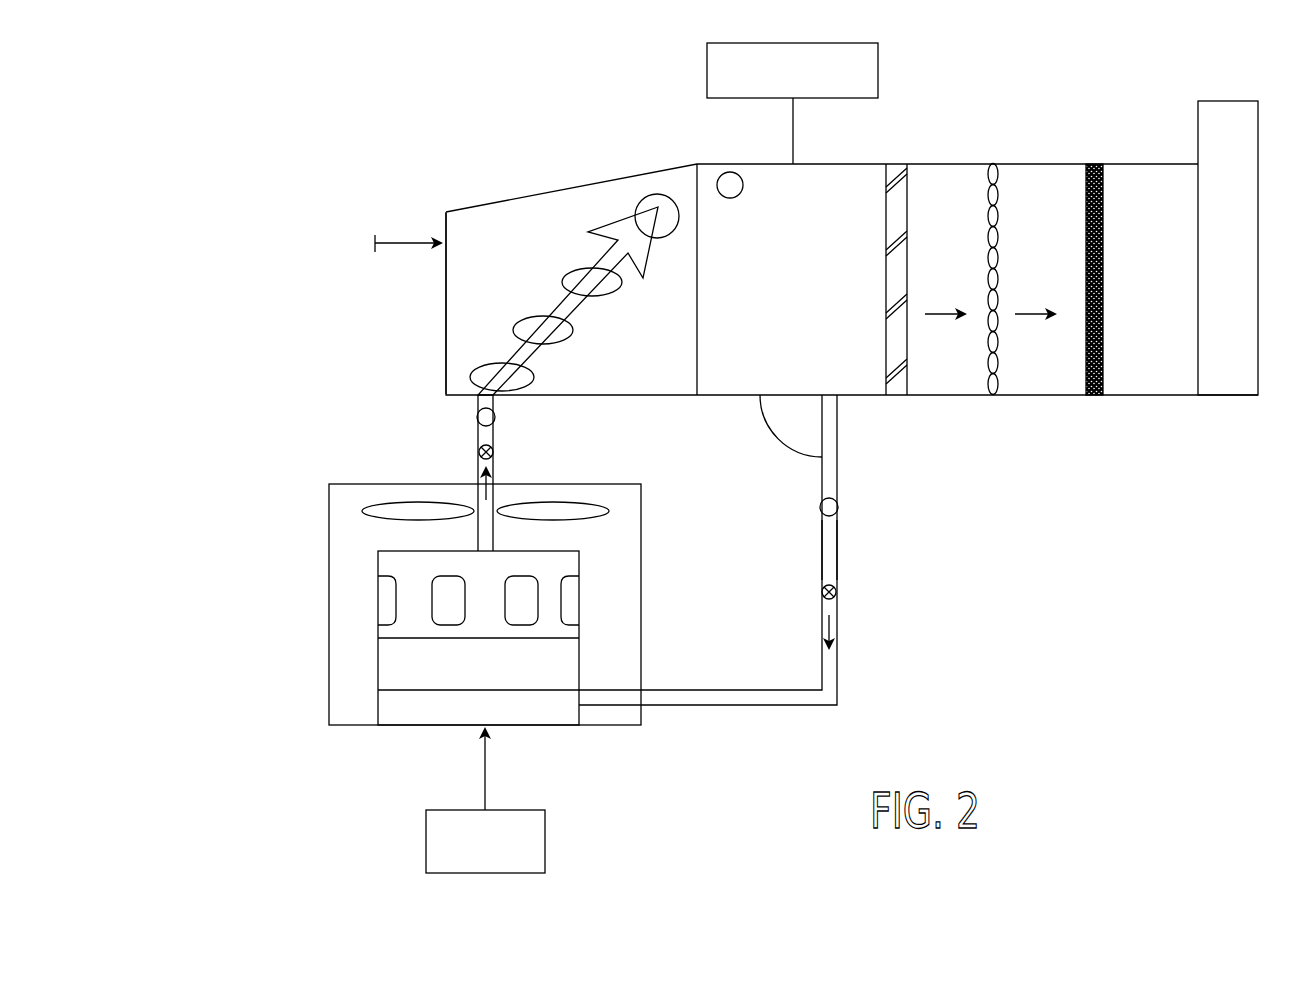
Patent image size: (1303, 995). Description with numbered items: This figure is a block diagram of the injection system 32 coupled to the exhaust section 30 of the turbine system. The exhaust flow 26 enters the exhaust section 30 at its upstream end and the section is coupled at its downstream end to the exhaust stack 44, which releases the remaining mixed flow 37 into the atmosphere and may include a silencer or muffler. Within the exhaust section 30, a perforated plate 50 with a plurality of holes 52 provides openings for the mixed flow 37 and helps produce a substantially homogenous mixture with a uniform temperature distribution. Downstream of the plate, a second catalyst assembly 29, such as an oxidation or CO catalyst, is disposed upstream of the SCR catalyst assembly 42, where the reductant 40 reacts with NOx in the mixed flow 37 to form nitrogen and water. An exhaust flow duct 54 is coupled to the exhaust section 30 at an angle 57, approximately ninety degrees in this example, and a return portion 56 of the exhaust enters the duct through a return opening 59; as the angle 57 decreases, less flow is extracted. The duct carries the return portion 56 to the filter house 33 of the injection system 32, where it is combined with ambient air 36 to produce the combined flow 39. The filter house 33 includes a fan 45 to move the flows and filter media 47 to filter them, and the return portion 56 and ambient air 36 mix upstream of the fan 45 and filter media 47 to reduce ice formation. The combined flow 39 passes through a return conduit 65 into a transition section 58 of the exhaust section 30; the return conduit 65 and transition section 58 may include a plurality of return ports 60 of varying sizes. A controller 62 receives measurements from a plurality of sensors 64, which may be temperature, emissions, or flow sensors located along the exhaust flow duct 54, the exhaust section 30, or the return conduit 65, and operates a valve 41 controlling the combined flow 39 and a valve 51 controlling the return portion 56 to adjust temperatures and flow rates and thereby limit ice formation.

The exhaust flow 26 is at (401, 242).
The second catalyst assembly 29 is at (988, 175).
The exhaust section 30 is at (665, 105).
The injection system 32 is at (428, 634).
The filter house 33 is at (329, 602).
The ambient air 36 is at (545, 838).
The mixed flow 37 is at (990, 290).
The combined flow 39 is at (487, 492).
The reductant 40 is at (1086, 205).
The valve 41 is at (478, 442).
The SCR catalyst assembly 42 is at (1070, 255).
The exhaust stack 44 is at (1197, 150).
The fan 45 is at (387, 522).
The filter media 47 is at (478, 638).
The perforated plate 50 is at (873, 257).
The valve 51 is at (814, 592).
The holes 52 is at (887, 178).
The exhaust flow duct 54 is at (840, 553).
The return portion 56 is at (838, 622).
The angle 57 is at (780, 447).
The transition section 58 is at (446, 303).
The return opening 59 is at (830, 395).
The return ports 60 is at (528, 318).
The controller 62 is at (794, 43).
The sensors 64 is at (744, 185).
The return conduit 65 is at (553, 419).